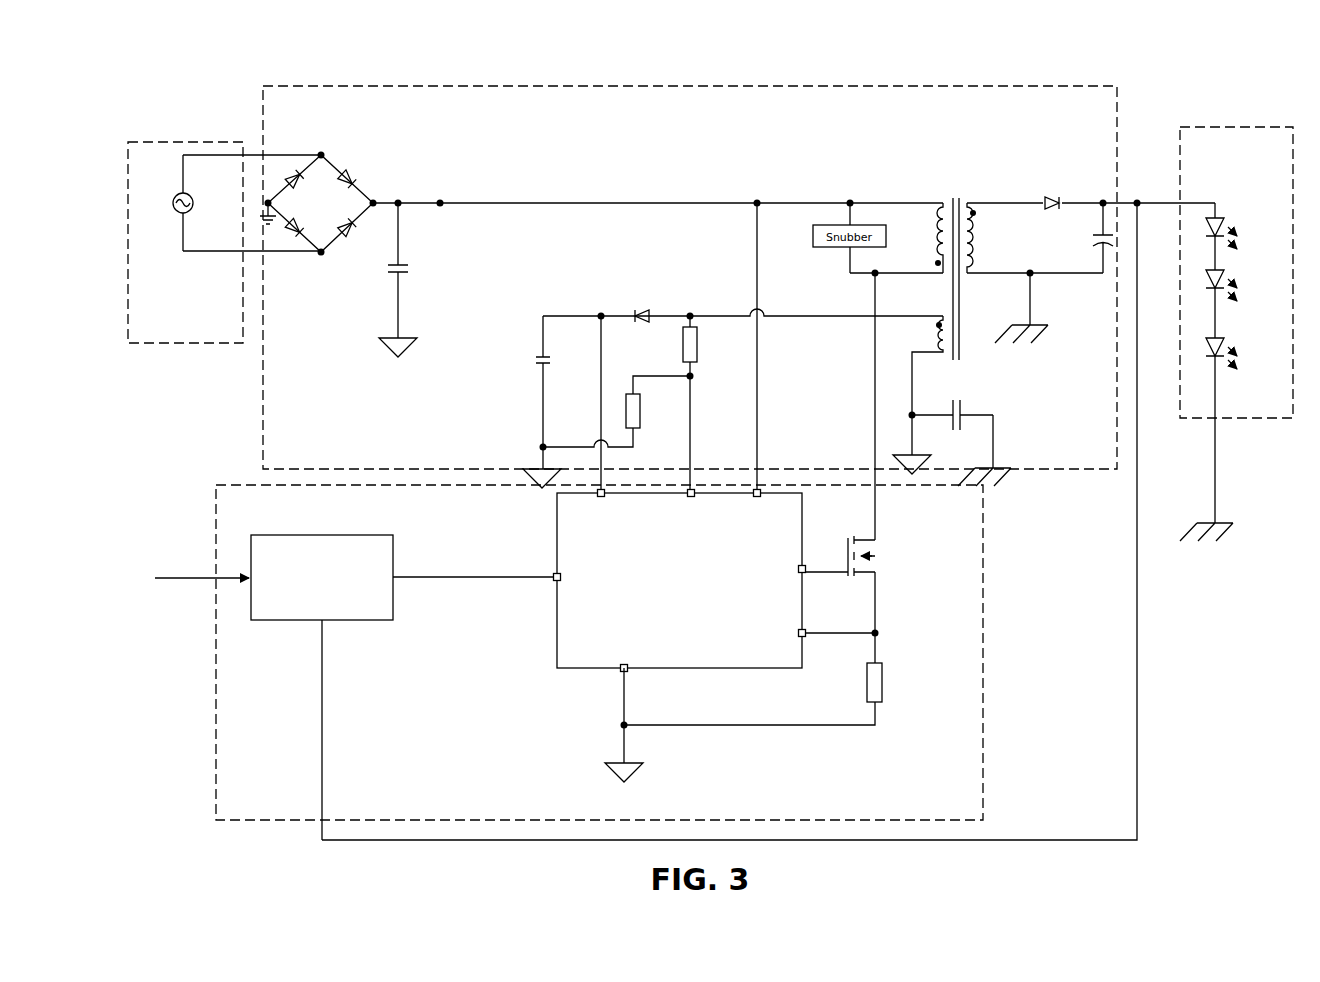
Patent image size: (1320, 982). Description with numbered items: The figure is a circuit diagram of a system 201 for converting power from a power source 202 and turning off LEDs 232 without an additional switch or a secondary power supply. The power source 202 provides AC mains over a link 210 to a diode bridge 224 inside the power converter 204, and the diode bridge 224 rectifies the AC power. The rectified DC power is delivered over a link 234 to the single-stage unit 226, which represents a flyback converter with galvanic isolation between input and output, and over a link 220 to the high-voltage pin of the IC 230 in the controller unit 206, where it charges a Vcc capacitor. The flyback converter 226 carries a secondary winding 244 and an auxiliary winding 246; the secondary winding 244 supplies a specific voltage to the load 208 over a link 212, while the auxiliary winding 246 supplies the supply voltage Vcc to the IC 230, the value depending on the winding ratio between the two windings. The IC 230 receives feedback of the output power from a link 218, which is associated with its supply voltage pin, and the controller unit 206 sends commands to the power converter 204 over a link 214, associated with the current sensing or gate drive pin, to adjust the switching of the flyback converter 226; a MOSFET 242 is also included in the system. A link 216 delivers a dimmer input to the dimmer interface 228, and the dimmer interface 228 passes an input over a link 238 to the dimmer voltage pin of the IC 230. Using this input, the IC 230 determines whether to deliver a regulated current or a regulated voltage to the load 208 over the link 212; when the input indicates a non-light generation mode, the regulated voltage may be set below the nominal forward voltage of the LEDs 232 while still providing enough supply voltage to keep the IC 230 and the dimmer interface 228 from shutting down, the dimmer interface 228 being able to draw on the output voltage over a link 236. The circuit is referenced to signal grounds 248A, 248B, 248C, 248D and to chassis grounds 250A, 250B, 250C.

The system 201 is at (190, 100).
The power source 202 is at (185, 242).
The power converter 204 is at (690, 277).
The controller unit 206 is at (599, 652).
The load 208 is at (1236, 325).
The link 210 is at (253, 152).
The link 212 is at (1125, 200).
The link 214 is at (875, 372).
The link 216 is at (207, 572).
The link 218 is at (790, 316).
The link 220 is at (757, 400).
The diode bridge 224 is at (368, 178).
The single-stage unit 226 is at (955, 196).
The dimmer interface 228 is at (322, 687).
The IC 230 is at (680, 581).
The LEDs 232 is at (1223, 343).
The link 234 is at (632, 203).
The link 236 is at (1137, 660).
The link 238 is at (513, 578).
The MOSFET 242 is at (878, 555).
The secondary winding 244 is at (975, 206).
The auxiliary winding 246 is at (925, 356).
The signal ground 248A is at (400, 338).
The signal ground 248B is at (540, 468).
The signal ground 248C is at (627, 765).
The signal ground 248D is at (905, 456).
The chassis ground 250A is at (1031, 330).
The chassis ground 250B is at (995, 466).
The chassis ground 250C is at (1181, 540).